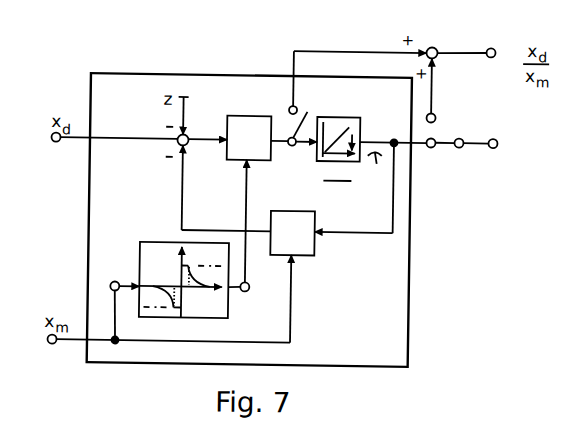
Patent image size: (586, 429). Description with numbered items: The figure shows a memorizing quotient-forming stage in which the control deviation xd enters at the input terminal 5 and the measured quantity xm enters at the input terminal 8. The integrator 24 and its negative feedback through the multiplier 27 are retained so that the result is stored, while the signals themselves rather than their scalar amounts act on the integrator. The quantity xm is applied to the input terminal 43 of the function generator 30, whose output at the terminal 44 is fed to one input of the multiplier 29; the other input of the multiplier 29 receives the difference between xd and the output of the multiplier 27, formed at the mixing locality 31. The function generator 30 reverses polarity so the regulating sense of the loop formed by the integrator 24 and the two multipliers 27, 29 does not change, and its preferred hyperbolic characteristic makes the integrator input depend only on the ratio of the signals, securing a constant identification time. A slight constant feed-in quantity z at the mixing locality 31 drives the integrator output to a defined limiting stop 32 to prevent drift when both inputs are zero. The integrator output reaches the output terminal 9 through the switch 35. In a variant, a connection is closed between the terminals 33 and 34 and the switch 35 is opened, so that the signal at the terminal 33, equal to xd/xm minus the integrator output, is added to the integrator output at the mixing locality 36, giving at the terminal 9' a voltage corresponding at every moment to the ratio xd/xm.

The input terminal 5 is at (48, 138).
The input terminal 8 is at (43, 341).
The output terminal 9 is at (501, 145).
The output terminal 9' is at (501, 54).
The integrator 24 is at (333, 116).
The multiplier 27 is at (317, 251).
The multiplier 29 is at (243, 116).
The function generator 30 is at (230, 313).
The mixing locality 31 is at (187, 145).
The limiting stop 32 is at (379, 171).
The terminal 33 is at (292, 145).
The terminal 34 is at (290, 107).
The switch 35 is at (434, 144).
The mixing locality 36 is at (433, 71).
The input terminal 43 is at (115, 284).
The output terminal 44 is at (259, 288).